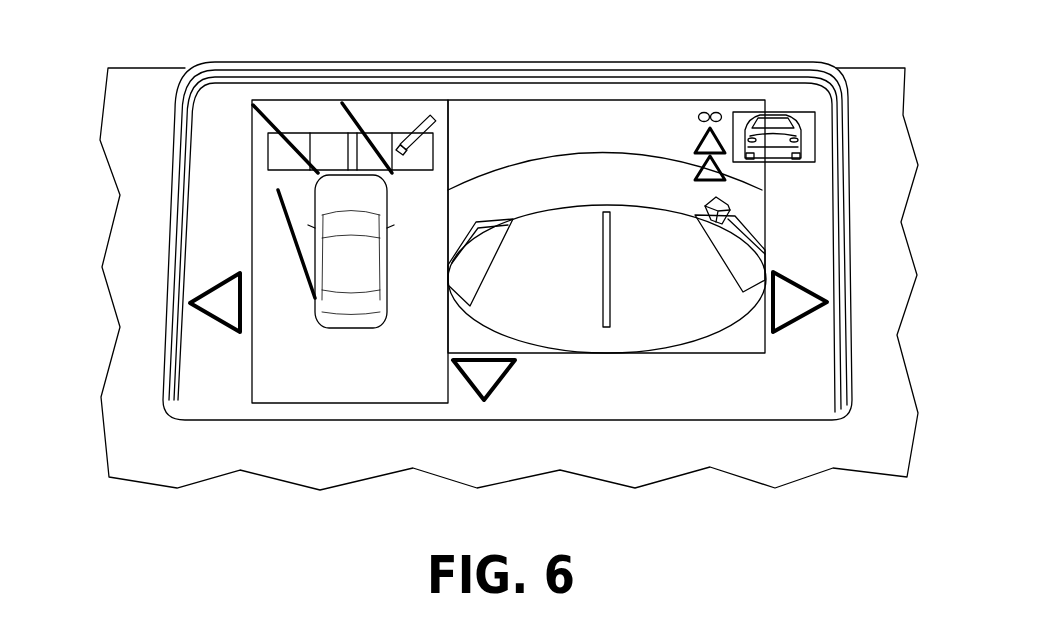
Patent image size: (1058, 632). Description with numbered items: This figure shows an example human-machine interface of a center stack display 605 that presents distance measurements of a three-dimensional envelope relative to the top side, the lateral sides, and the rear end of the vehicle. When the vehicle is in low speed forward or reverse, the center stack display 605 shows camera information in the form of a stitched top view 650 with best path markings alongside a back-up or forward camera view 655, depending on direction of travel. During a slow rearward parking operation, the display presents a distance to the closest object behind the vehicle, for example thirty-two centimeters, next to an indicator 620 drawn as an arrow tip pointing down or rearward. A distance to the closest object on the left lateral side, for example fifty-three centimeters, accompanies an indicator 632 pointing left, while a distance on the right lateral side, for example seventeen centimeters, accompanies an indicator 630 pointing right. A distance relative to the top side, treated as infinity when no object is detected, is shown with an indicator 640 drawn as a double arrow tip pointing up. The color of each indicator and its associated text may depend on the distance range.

The center stack display 605 is at (740, 62).
The indicator 620 is at (475, 397).
The indicator 630 is at (795, 327).
The indicator 632 is at (222, 322).
The indicator 640 is at (803, 142).
The stitched top view 650 is at (325, 143).
The camera view 655 is at (657, 242).